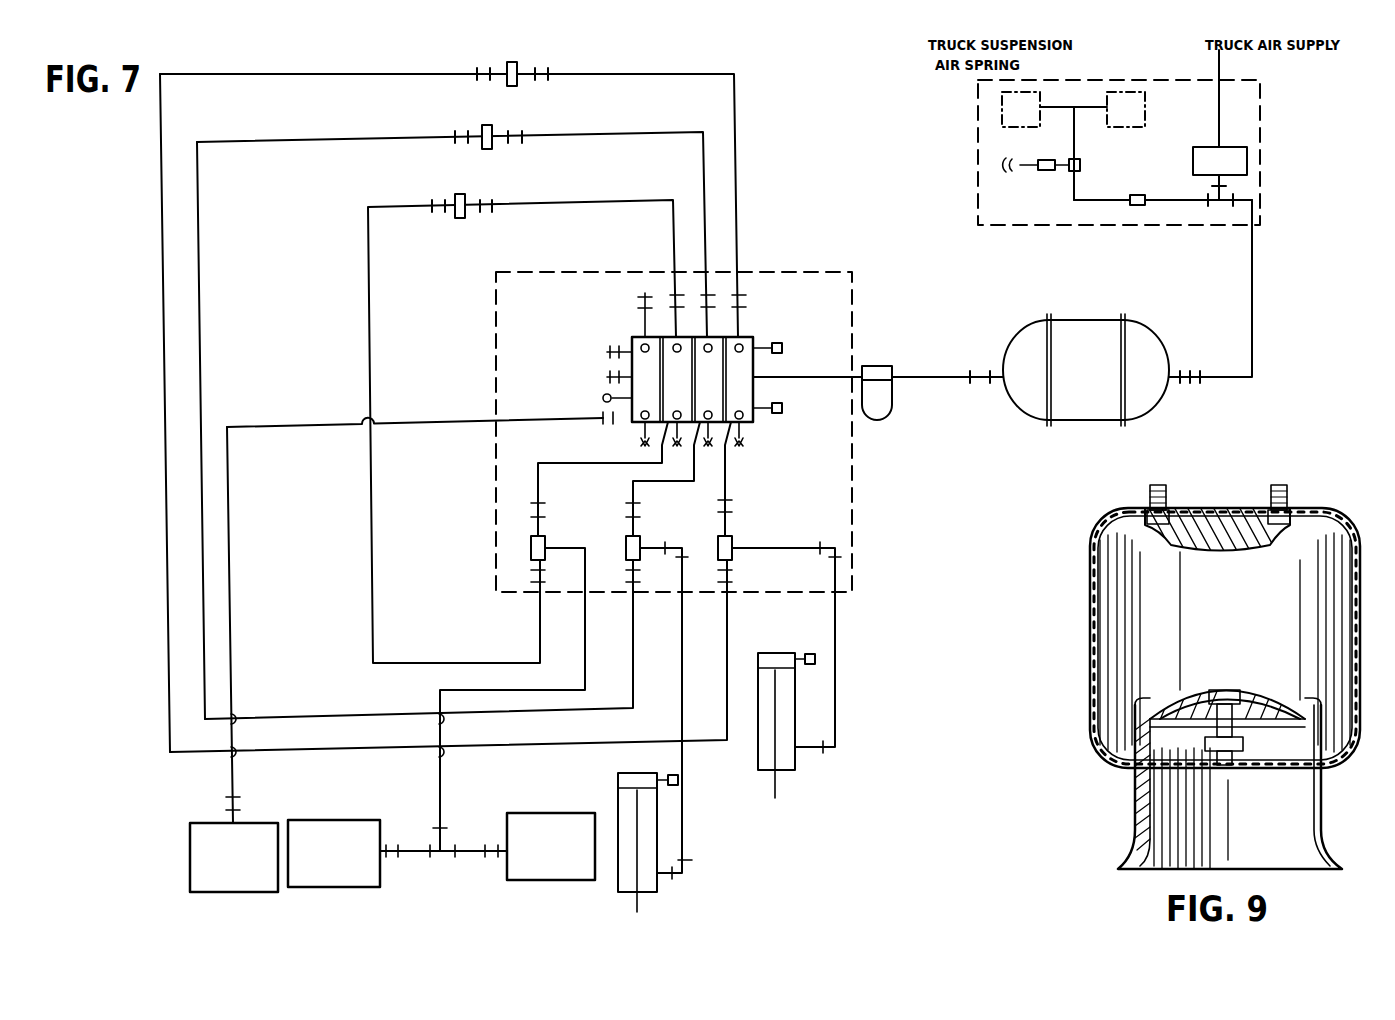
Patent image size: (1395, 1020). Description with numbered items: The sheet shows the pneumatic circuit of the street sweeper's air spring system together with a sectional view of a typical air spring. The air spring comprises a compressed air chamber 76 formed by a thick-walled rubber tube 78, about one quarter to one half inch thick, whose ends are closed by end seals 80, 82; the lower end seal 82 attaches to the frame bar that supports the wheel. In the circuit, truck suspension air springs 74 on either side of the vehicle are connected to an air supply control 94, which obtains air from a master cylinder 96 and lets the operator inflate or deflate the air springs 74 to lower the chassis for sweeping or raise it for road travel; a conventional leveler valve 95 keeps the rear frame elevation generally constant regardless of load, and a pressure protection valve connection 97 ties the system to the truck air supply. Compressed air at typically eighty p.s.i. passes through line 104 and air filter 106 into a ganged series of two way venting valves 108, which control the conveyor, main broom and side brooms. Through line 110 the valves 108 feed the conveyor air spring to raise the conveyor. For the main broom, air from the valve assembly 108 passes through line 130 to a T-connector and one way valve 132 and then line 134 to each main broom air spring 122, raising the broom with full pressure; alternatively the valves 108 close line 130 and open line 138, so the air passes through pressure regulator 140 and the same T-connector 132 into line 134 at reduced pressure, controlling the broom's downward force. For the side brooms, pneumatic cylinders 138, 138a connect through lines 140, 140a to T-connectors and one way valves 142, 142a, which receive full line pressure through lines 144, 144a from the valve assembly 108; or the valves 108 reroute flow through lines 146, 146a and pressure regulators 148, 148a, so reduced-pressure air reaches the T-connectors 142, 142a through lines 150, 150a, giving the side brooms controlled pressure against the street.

In FIG. 7, the adjustable air spring 74 is at (1032, 119).
In FIG. 9, the compressed air chamber 76 is at (1224, 625).
In FIG. 9, the tube 78 is at (1350, 556).
In FIG. 9, the end seal 80 is at (1207, 522).
In FIG. 9, the lower end seal 82 is at (1235, 697).
In FIG. 7, the air supply control 94 is at (1060, 168).
In FIG. 7, the leveler valve 95 is at (1135, 208).
In FIG. 7, the master cylinder 96 is at (1098, 375).
In FIG. 7, the pressure protection valve connection 97 is at (1240, 160).
In FIG. 7, the line 104 is at (918, 372).
In FIG. 7, the air filter 106 is at (882, 397).
In FIG. 7, the ganged series of two way venting valves 108 is at (758, 330).
In FIG. 7, the line 110 is at (421, 424).
In FIG. 7, the adjustable air spring 122 is at (518, 880).
In FIG. 7, the line 130 is at (566, 462).
In FIG. 7, the T-connector and one way valve 132 is at (531, 542).
In FIG. 7, the line 134 is at (585, 658).
In FIG. 7, the pneumatic cylinder 138 is at (541, 205).
In FIG. 7, the pneumatic cylinder 138a is at (795, 770).
In FIG. 7, the pressure regulator / line 140 is at (458, 193).
In FIG. 7, the line 140a is at (838, 616).
In FIG. 7, the T-connector and one way valve 142 is at (640, 540).
In FIG. 7, the T-connector and one way valve 142a is at (733, 540).
In FIG. 7, the line 144 is at (723, 466).
In FIG. 7, the line 144a is at (727, 483).
In FIG. 7, the line 146 is at (706, 203).
In FIG. 7, the line 146a is at (736, 102).
In FIG. 7, the pressure regulator 148 is at (495, 128).
In FIG. 7, the pressure regulator 148a is at (520, 65).
In FIG. 7, the line 150 is at (163, 324).
In FIG. 7, the line 150a is at (199, 392).